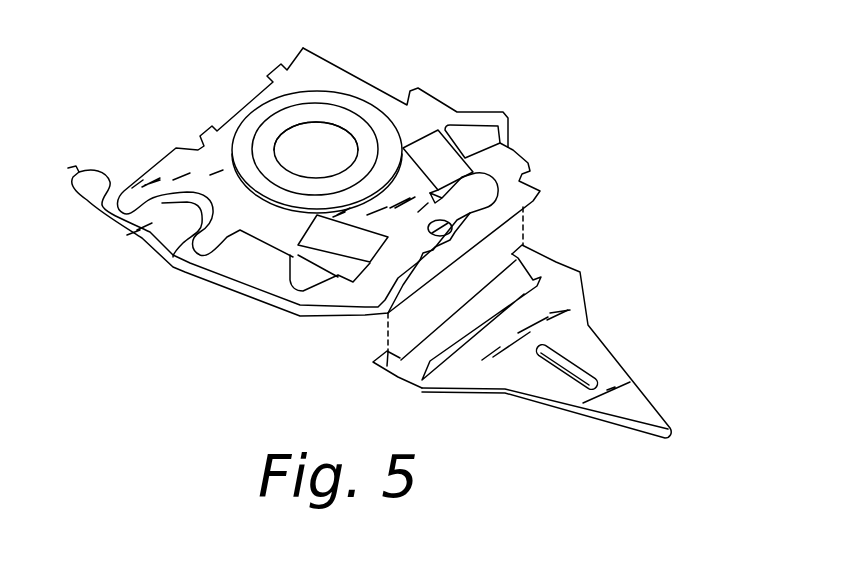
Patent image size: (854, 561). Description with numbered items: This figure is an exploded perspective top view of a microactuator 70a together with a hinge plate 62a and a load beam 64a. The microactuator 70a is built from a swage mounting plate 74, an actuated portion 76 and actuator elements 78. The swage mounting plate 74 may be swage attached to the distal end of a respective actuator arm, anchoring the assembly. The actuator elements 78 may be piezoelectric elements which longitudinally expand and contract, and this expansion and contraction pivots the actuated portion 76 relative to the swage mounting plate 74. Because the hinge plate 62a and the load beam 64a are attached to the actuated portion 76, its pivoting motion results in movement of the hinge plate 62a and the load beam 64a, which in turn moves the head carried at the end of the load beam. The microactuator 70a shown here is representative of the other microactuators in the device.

The microactuator 70a is at (202, 332).
The swage mounting plate 74 is at (334, 77).
The actuated portion 76 is at (528, 193).
The actuator elements 78 is at (458, 173).
The hinge plate 62a is at (398, 373).
The load beam 64a is at (538, 395).